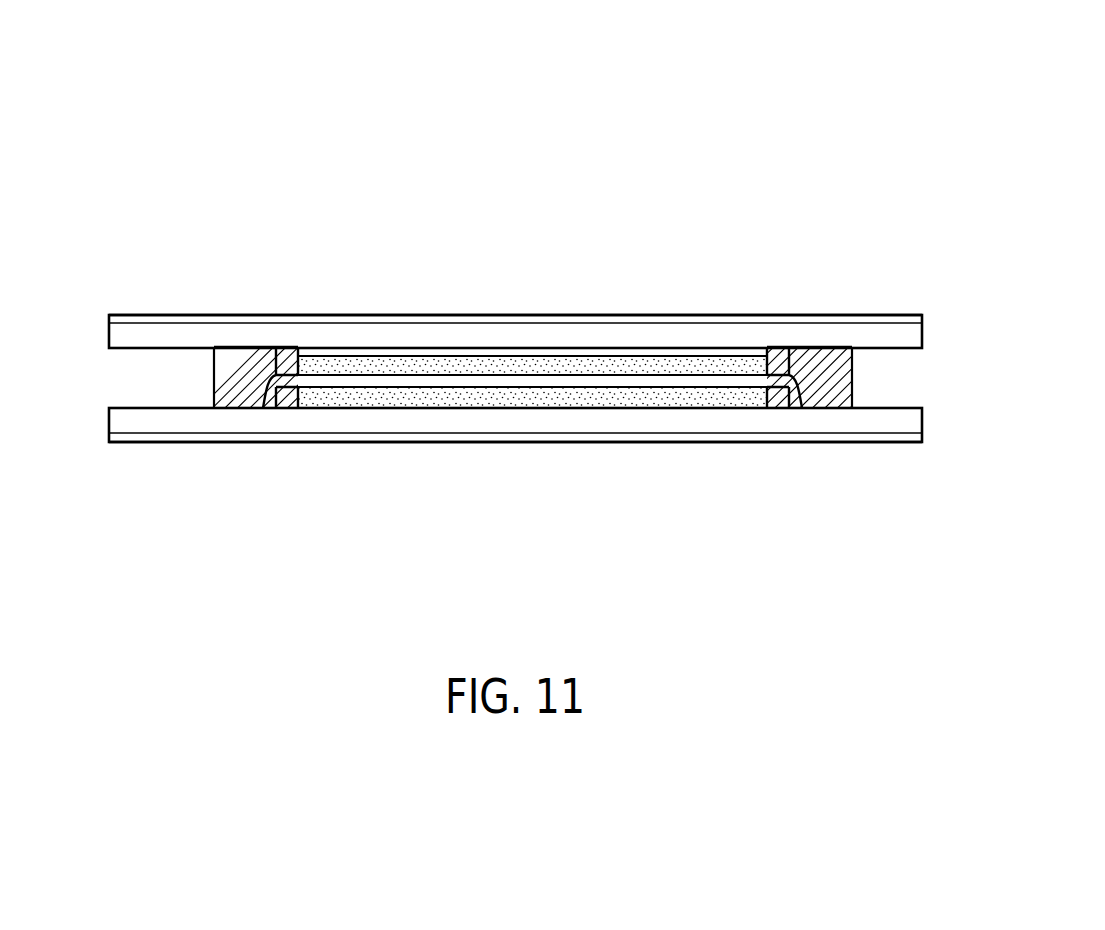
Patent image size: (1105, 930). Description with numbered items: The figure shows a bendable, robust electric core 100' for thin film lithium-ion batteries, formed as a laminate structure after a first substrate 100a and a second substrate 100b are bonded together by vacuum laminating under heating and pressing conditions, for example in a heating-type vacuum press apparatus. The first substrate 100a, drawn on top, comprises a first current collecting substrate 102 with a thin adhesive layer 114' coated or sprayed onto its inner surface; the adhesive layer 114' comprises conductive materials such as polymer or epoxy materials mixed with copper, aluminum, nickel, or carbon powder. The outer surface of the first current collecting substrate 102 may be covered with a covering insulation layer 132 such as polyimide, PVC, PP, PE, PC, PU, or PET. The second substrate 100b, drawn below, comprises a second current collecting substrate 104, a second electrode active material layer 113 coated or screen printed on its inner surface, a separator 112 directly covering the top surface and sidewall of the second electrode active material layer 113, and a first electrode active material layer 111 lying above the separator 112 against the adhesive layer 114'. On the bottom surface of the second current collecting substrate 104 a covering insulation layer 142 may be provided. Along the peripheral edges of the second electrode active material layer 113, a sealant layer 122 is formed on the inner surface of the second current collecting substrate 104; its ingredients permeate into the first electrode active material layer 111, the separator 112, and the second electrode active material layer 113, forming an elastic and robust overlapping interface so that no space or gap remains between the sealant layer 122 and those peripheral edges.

The electric core 100' is at (582, 302).
The first substrate 100a is at (1015, 291).
The second substrate 100b is at (1011, 476).
The first current collecting substrate 102 is at (910, 333).
The second current collecting substrate 104 is at (910, 419).
The first electrode active material layer 111 is at (648, 365).
The separator 112 is at (525, 380).
The second electrode active material layer 113 is at (428, 397).
The adhesive layer 114' is at (532, 376).
The sealant layer 122 is at (240, 378).
The covering insulation layer 132 is at (879, 313).
The covering insulation layer 142 is at (878, 443).